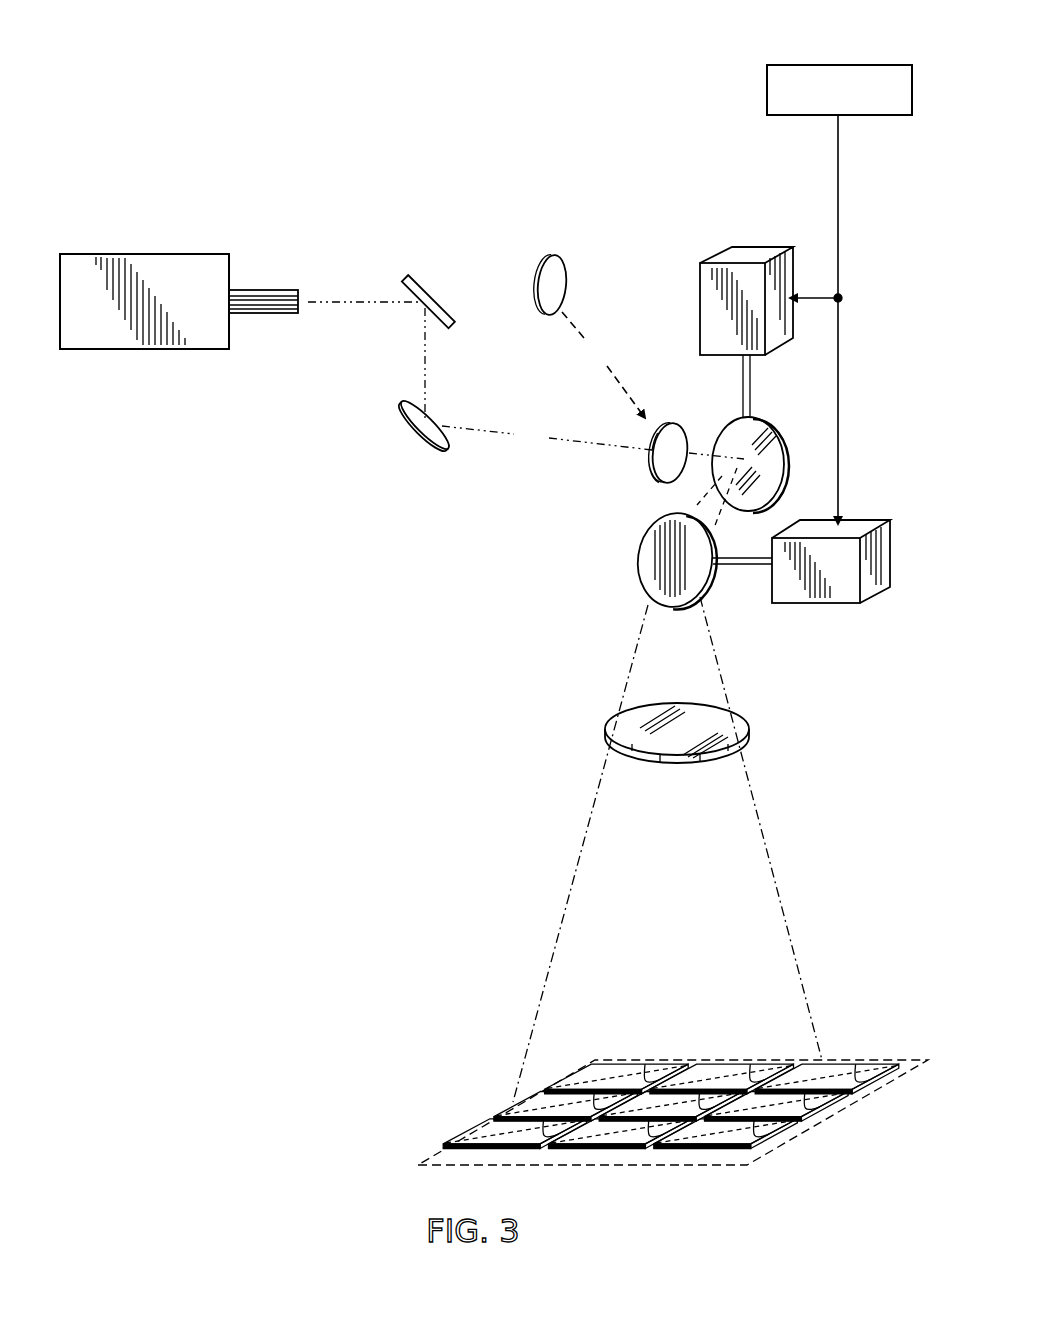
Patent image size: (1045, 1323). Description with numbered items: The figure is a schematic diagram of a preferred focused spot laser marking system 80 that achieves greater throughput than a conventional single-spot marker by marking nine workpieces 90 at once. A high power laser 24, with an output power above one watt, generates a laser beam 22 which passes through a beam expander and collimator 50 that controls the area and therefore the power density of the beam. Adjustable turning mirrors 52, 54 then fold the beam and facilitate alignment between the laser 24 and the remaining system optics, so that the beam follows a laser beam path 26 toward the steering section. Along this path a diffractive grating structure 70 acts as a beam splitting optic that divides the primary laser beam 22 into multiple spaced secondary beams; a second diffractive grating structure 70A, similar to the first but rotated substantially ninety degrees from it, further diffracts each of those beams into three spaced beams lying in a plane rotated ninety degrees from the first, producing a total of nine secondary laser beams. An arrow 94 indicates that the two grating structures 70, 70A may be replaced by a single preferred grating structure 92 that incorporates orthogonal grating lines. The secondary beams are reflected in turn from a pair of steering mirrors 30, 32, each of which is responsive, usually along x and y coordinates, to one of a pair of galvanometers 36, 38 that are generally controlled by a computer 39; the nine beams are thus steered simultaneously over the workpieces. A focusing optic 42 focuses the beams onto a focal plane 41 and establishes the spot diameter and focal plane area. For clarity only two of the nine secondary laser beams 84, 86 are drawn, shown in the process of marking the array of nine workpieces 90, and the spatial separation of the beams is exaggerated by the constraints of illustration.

The focused spot marking system 80 is at (410, 146).
The high power laser 24 is at (104, 333).
The beam expander and collimator 50 is at (262, 300).
The laser beam 22 is at (346, 302).
The adjustable turning mirror 52 is at (417, 276).
The adjustable turning mirror 54 is at (431, 447).
The laser beam path 26 is at (593, 440).
The diffractive grating structure 70 is at (676, 432).
The second diffractive grating structure 70A is at (649, 468).
The grating structure 92 is at (560, 277).
The arrow 94 is at (603, 365).
The steering mirror 30 is at (787, 467).
The galvanometer 36 is at (748, 252).
The galvanometer 38 is at (855, 528).
The computer 39 is at (767, 80).
The steering mirror 32 is at (648, 547).
The secondary laser beam 84 is at (580, 853).
The secondary laser beam 86 is at (761, 828).
The focusing optic 42 is at (740, 712).
The focal plane 41 is at (418, 1164).
The workpieces 90 is at (472, 1100).